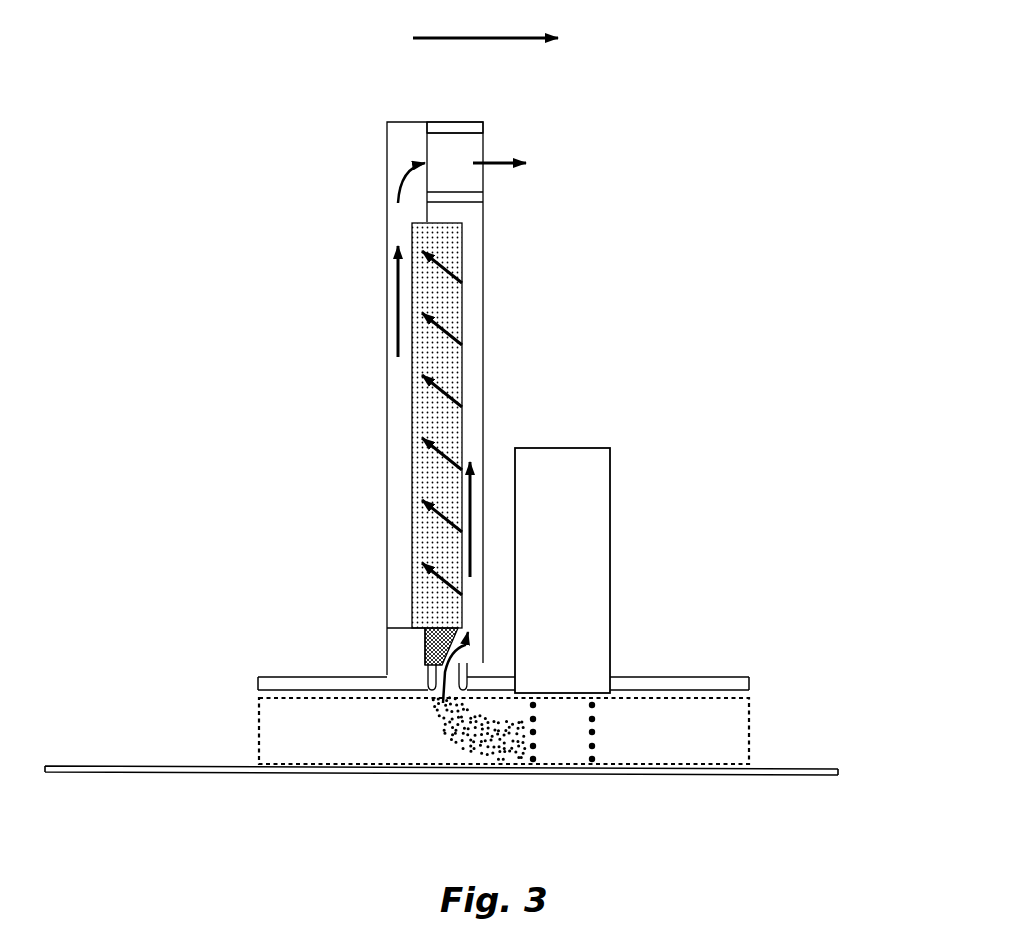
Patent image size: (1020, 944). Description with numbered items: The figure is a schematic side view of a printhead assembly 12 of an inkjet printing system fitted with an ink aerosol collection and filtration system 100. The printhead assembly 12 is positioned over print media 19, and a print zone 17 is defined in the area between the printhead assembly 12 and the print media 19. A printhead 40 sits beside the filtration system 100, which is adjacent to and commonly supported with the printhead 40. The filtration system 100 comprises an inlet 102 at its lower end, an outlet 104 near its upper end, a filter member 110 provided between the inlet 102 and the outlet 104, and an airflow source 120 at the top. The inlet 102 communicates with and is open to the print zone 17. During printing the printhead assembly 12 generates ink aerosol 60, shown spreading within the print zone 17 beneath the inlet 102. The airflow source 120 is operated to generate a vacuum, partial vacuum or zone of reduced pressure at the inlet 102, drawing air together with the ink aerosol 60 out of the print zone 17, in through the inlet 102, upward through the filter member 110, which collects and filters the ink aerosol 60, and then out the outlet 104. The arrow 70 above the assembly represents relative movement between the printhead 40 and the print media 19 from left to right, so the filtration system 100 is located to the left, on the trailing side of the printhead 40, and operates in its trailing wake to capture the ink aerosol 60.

The printhead assembly 12 is at (620, 114).
The print zone 17 is at (258, 733).
The print media 19 is at (772, 767).
The printhead 40 is at (597, 558).
The ink aerosol 60 is at (470, 750).
The arrow 70 is at (497, 35).
The ink aerosol collection and filtration system 100 is at (357, 156).
The inlet 102 is at (437, 680).
The outlet 104 is at (475, 182).
The filter member 110 is at (472, 370).
The airflow source 120 is at (458, 130).